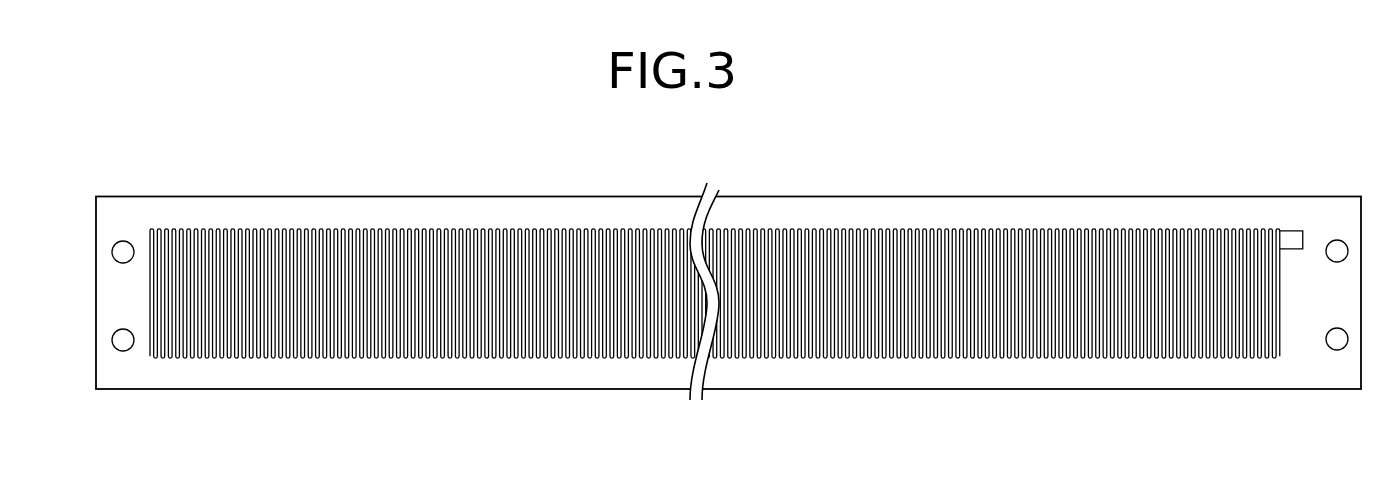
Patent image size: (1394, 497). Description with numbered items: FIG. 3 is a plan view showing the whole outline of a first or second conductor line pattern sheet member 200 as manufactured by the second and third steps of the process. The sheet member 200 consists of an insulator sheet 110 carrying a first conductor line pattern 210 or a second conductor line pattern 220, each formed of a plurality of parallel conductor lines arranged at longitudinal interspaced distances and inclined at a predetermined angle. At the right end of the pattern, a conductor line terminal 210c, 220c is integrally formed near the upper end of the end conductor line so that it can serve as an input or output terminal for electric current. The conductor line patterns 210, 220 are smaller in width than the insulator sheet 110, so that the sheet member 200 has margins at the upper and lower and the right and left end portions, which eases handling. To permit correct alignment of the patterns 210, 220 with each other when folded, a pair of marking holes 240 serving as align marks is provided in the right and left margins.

The conductor line pattern sheet member 200 is at (735, 276).
The insulator sheet 110 is at (920, 205).
The first conductor line pattern 210 is at (715, 229).
The second conductor line pattern 220 is at (1082, 232).
The conductor line terminal 210c is at (1295, 185).
The second conductor line terminal 220c is at (1300, 238).
The marking holes 240 is at (1338, 346).